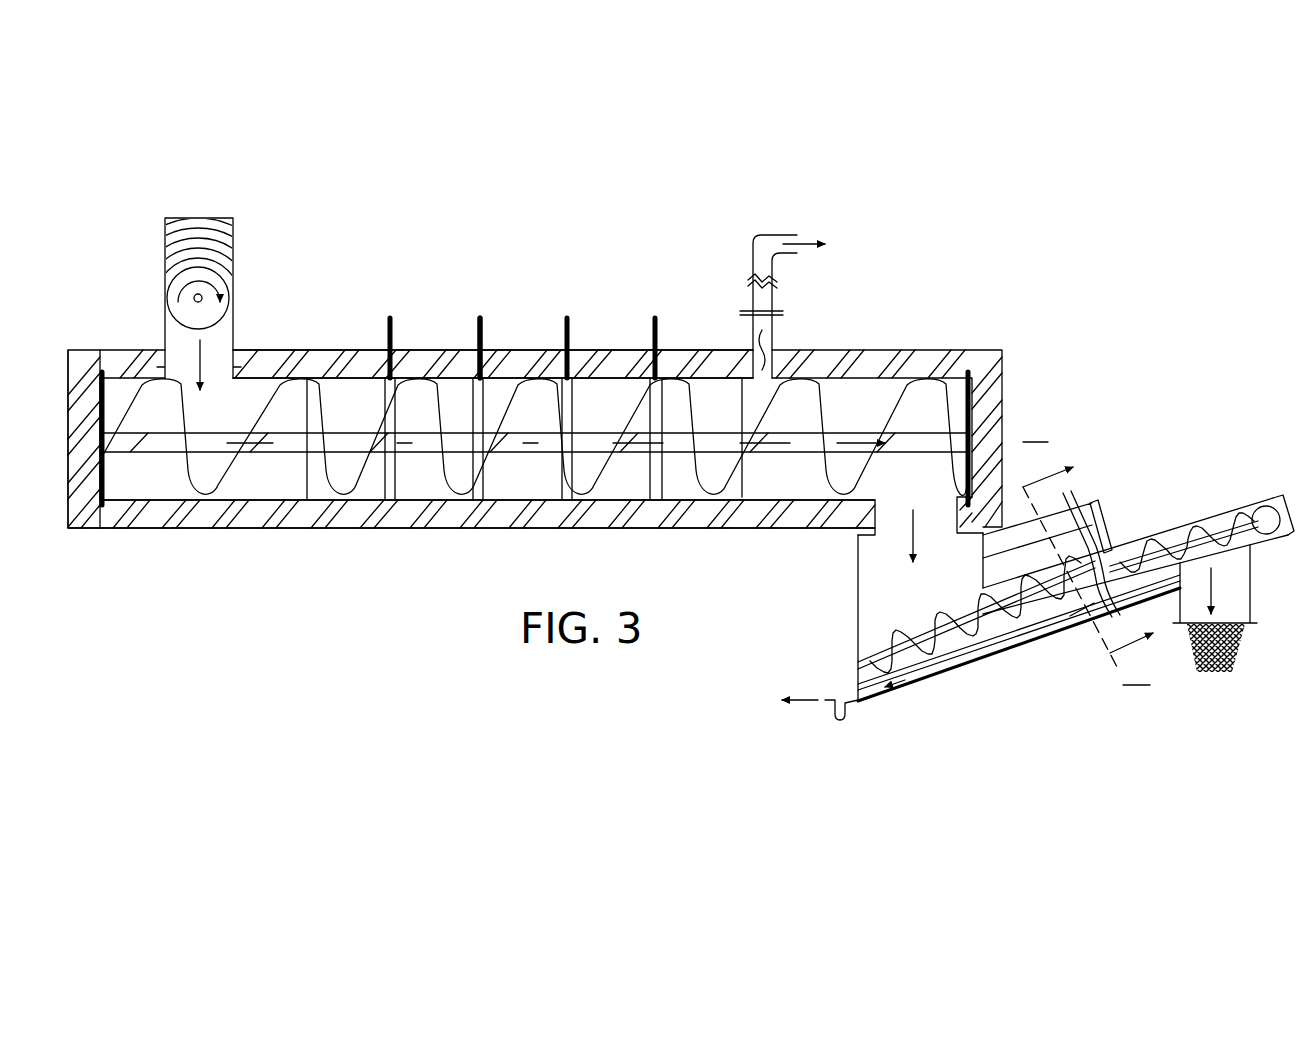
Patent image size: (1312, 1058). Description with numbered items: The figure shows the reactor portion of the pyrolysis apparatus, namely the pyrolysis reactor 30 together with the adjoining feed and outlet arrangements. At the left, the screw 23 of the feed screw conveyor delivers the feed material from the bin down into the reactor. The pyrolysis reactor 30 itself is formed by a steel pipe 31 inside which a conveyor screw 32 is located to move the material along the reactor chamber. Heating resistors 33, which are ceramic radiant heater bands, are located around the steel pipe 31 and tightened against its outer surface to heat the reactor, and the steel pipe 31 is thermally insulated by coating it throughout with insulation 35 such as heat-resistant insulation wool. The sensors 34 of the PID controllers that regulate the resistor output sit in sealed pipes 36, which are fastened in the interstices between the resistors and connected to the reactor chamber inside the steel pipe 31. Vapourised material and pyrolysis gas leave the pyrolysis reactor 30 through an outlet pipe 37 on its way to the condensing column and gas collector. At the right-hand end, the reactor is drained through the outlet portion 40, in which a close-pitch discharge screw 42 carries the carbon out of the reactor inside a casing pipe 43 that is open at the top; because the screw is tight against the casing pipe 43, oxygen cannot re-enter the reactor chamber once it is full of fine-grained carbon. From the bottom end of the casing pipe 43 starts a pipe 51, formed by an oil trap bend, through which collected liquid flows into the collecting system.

The screw 23 is at (220, 308).
The pyrolysis reactor 30 is at (569, 272).
The steel pipe 31 is at (160, 500).
The conveyor screw 32 is at (240, 483).
The heating resistors 33 is at (353, 375).
The sensors 34 is at (390, 320).
The insulation 35 is at (342, 522).
The sealed pipes 36 is at (392, 335).
The outlet pipe 37 is at (753, 262).
The outlet portion 40 is at (1162, 508).
The discharge screw 42 is at (1013, 627).
The casing pipe 43 is at (1065, 610).
The pipe 51 is at (838, 722).